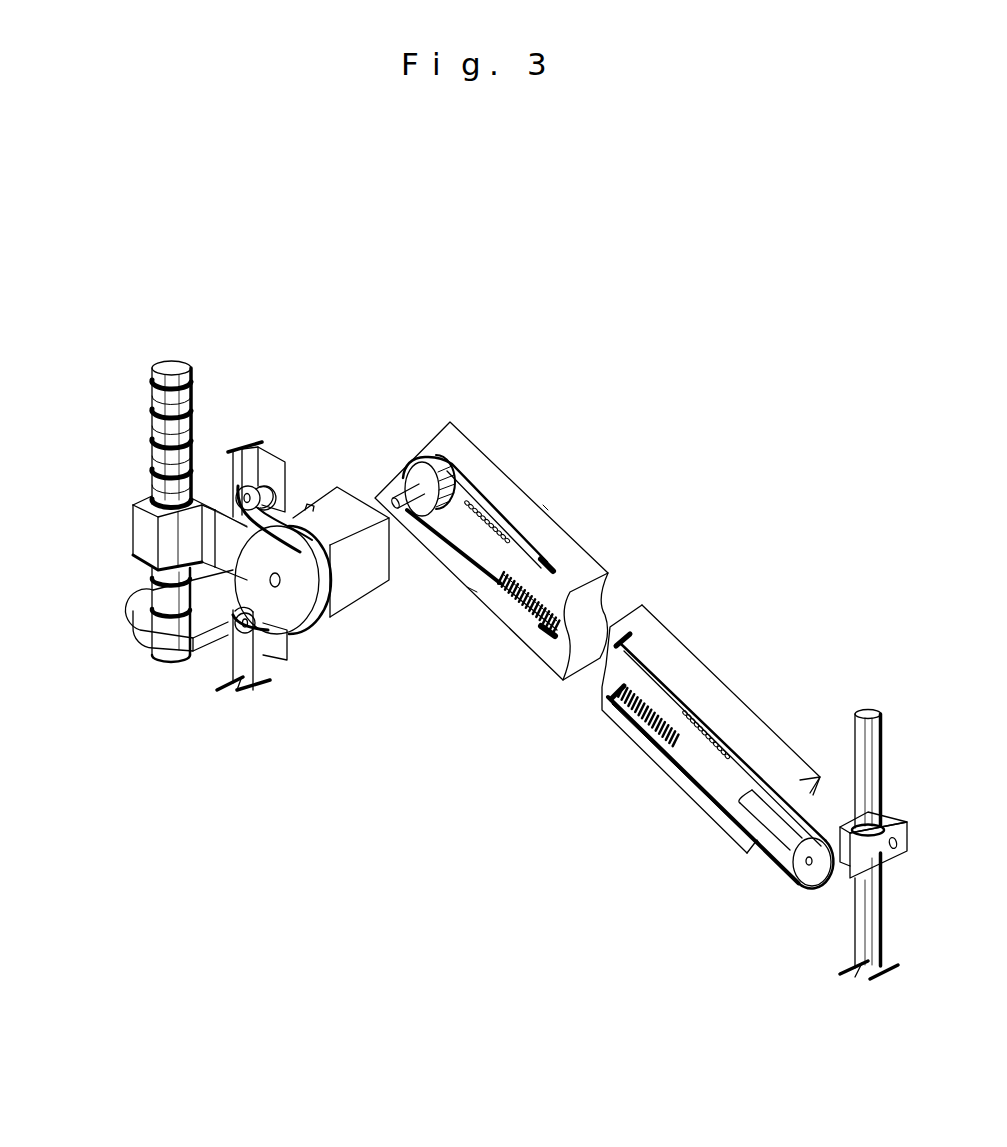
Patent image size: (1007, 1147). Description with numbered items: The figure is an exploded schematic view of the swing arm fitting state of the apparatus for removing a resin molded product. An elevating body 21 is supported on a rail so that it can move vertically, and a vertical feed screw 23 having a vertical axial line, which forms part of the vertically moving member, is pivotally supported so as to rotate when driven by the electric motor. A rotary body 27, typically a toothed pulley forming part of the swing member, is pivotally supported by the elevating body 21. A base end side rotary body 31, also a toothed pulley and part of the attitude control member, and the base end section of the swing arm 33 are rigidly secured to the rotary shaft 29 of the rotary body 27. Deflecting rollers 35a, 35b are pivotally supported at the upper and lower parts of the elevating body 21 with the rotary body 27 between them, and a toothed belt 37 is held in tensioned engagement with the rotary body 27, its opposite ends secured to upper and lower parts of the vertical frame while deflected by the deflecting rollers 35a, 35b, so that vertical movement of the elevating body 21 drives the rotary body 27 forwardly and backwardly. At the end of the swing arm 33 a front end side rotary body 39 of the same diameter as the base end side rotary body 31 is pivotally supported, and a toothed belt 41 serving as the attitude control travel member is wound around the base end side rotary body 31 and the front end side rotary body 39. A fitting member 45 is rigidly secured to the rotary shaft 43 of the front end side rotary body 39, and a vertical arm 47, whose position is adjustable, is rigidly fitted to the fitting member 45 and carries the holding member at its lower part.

The elevating body 21 is at (165, 550).
The vertical feed screw 23 is at (170, 440).
The rotary body 27 is at (292, 602).
The rotary shaft 29 is at (413, 490).
The base end side rotary body 31 is at (428, 507).
The swing arm 33 is at (578, 540).
The deflecting roller 35a is at (255, 487).
The deflecting roller 35b is at (255, 627).
The toothed belt 37 is at (248, 640).
The front end side rotary body 39 is at (807, 887).
The toothed belt 41 is at (680, 747).
The rotary shaft 43 is at (806, 862).
The fitting member 45 is at (888, 860).
The vertical arm 47 is at (863, 757).